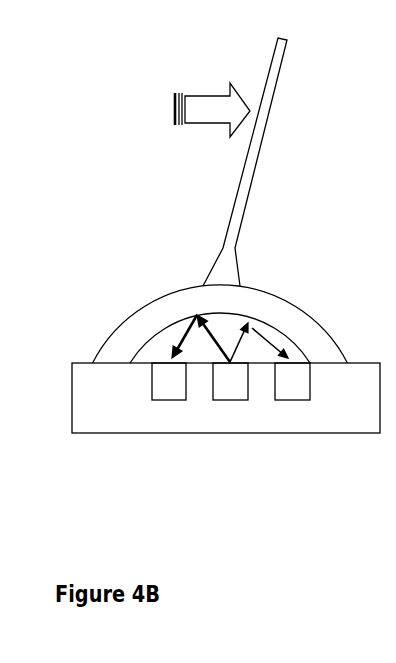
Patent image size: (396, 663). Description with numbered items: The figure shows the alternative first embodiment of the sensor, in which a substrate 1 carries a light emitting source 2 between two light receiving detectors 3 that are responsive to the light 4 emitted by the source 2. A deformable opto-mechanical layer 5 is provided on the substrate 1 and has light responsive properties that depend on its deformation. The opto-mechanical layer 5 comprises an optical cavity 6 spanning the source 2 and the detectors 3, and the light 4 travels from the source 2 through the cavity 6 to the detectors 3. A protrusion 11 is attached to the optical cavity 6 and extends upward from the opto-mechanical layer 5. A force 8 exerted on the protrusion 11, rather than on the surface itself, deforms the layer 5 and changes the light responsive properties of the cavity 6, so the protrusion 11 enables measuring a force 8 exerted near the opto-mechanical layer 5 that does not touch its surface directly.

The substrate 1 is at (359, 410).
The light emitting source 2 is at (233, 417).
The light receiving detector 3 is at (171, 417).
The light 4 is at (203, 340).
The opto-mechanical layer 5 is at (298, 317).
The optical cavity 6 is at (151, 346).
The force 8 is at (153, 102).
The protrusion 11 is at (258, 197).